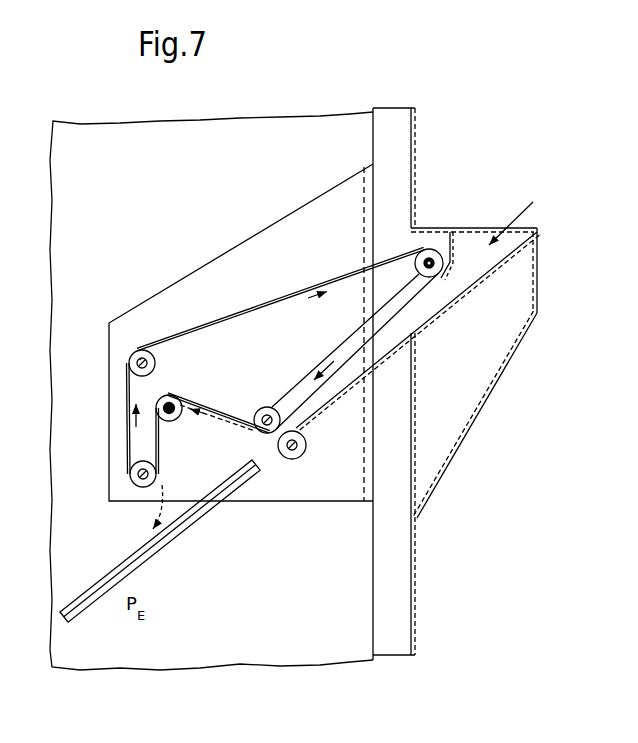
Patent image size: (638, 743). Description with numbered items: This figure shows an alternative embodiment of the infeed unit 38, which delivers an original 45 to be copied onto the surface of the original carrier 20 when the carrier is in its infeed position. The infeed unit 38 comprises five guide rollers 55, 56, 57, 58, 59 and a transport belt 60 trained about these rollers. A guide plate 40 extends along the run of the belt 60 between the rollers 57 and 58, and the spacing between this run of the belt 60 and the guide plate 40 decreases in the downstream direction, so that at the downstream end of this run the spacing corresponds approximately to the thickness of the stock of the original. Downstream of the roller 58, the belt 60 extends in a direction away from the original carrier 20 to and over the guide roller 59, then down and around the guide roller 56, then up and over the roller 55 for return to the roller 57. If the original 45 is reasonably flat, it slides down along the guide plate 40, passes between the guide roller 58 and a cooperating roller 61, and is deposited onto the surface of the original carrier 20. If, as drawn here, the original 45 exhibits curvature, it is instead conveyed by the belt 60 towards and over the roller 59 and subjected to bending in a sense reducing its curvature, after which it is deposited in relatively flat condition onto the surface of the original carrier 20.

The original carrier 20 is at (170, 543).
The infeed unit 38 is at (340, 234).
The guide plate 40 is at (442, 308).
The original 45 is at (357, 358).
The guide roller 55 is at (155, 363).
The guide roller 56 is at (155, 477).
The guide roller 57 is at (418, 276).
The guide roller 58 is at (264, 407).
The guide roller 59 is at (180, 400).
The transport belt 60 is at (249, 311).
The cooperating roller 61 is at (292, 459).